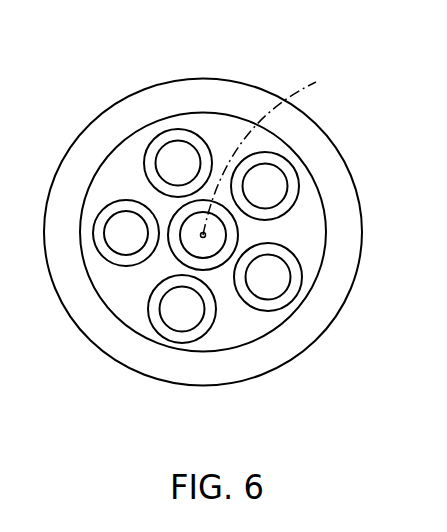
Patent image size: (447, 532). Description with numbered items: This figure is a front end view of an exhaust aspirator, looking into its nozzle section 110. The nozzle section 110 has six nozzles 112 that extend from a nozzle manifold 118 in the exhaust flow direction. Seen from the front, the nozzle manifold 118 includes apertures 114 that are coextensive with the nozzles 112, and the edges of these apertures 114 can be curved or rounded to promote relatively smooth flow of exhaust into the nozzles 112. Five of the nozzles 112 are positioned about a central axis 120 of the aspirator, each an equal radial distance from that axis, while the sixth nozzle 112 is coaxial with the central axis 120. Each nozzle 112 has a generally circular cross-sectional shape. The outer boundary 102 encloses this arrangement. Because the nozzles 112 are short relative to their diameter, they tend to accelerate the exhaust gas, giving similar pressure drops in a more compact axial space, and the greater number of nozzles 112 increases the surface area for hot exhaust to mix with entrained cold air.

The outer jacket 102 is at (264, 86).
The nozzle section 110 is at (207, 113).
The nozzle 112 is at (165, 138).
The aperture 114 is at (118, 205).
The nozzle manifold 118 is at (128, 173).
The central axis 120 is at (280, 153).